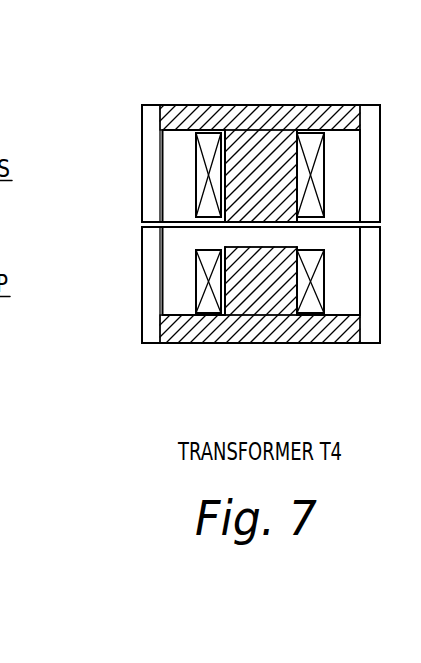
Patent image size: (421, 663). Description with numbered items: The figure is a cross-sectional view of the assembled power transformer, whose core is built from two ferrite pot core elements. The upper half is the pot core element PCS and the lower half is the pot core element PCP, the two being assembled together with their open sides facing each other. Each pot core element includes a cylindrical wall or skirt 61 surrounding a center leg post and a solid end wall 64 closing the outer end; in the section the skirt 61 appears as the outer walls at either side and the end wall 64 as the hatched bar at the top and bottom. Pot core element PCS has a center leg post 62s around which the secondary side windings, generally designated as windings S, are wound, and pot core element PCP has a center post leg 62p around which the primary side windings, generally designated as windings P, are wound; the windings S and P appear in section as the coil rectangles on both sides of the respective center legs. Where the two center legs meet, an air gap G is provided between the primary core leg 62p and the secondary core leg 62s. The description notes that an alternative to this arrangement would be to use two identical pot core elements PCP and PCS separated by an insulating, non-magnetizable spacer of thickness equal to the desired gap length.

The cylindrical wall 61 is at (141, 124).
The center leg post 62s is at (257, 150).
The center post leg 62p is at (262, 310).
The solid end wall 64 is at (278, 109).
The secondary side windings S is at (200, 182).
The primary side windings P is at (200, 293).
The air gap G is at (252, 237).
The pot core element PCS is at (125, 180).
The pot core element PCP is at (120, 296).